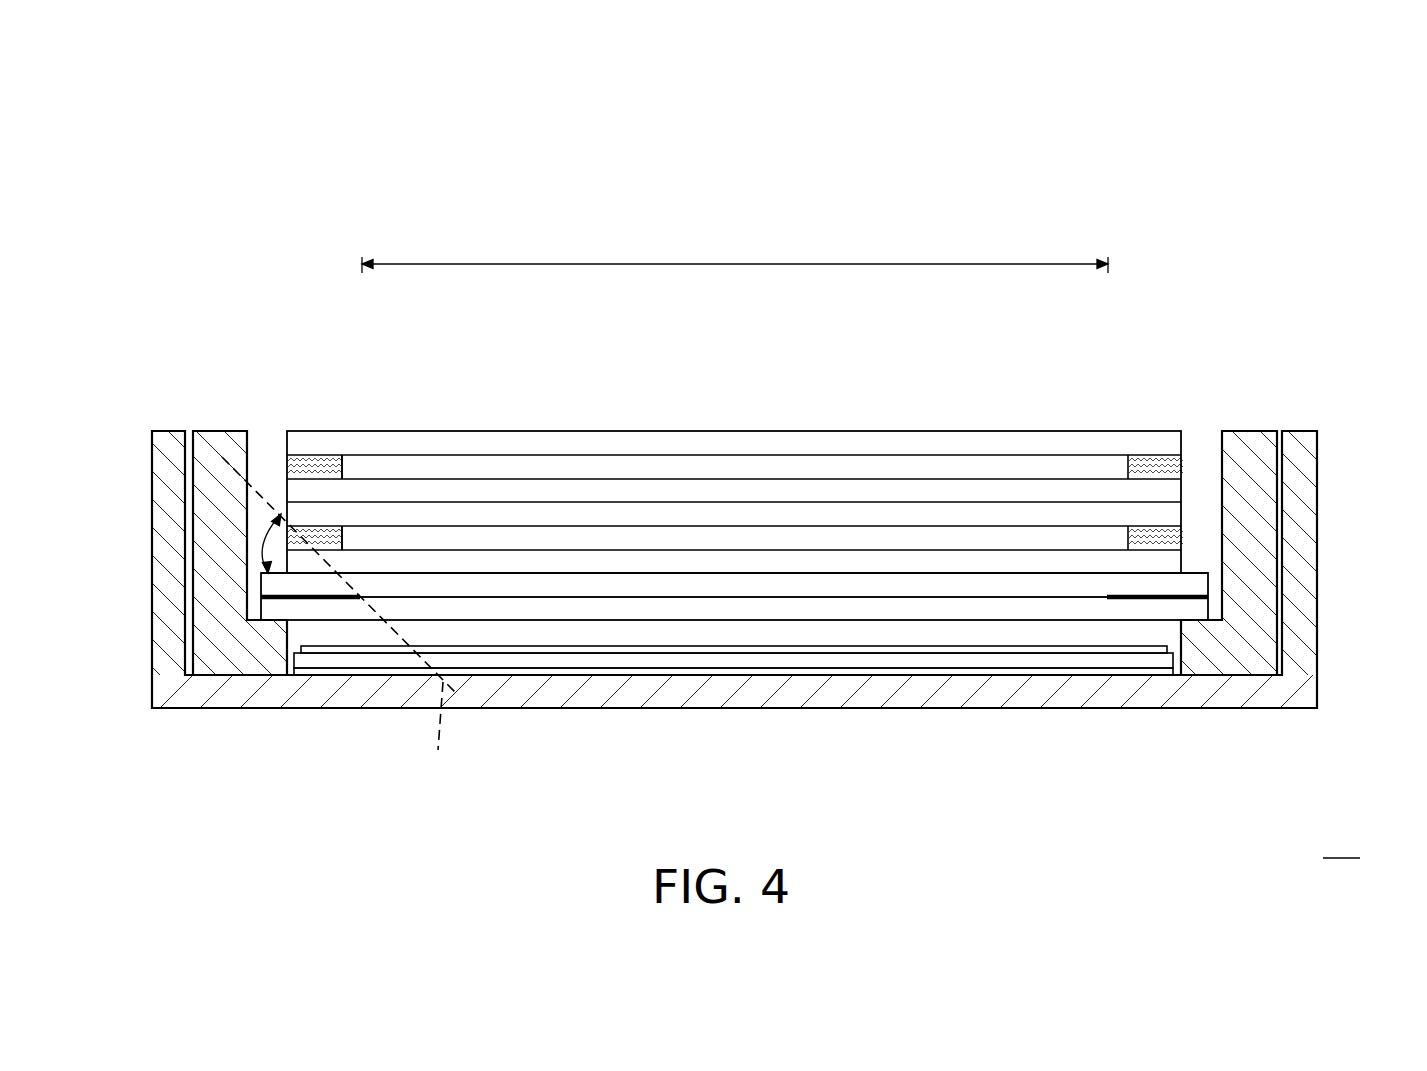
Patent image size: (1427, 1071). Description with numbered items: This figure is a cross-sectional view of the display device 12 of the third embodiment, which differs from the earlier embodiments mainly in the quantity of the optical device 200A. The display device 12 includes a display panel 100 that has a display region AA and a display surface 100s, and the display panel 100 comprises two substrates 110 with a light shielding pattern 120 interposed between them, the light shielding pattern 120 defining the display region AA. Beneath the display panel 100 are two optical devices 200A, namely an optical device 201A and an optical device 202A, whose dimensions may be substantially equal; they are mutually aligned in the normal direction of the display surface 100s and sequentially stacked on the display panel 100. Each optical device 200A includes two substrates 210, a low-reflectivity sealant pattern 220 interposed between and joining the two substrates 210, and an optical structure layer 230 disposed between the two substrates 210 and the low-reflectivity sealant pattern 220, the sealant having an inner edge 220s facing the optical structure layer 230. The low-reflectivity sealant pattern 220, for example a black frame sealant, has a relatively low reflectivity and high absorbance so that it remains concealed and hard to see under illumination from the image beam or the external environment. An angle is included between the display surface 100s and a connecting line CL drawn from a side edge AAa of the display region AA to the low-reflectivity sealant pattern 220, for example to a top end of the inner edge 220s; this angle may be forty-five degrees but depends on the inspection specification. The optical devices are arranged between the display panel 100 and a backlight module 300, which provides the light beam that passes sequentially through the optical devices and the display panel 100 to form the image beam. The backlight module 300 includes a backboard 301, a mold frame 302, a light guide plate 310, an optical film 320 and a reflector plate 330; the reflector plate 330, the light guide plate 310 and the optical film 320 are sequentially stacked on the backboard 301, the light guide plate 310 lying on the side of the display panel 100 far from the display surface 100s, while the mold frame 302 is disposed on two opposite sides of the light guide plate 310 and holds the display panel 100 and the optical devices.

The backlight module 300 is at (108, 52).
The backboard 301 is at (750, 693).
The mold frame 302 is at (217, 658).
The light guide plate 310 is at (608, 660).
The optical film 320 is at (538, 650).
The reflector plate 330 is at (682, 672).
The optical device 200A is at (1080, 355).
The substrate 210 is at (947, 445).
The low-reflectivity sealant pattern 220 is at (1133, 540).
The optical structure layer 230 is at (1015, 467).
The inner edge 220s is at (345, 540).
The optical device 202A is at (1193, 468).
The optical device 201A is at (1193, 541).
The display panel 100 is at (1122, 790).
The substrate 110 is at (1038, 585).
The light shielding pattern 120 is at (1140, 602).
The display surface 100s is at (652, 575).
The side edge AAa is at (363, 597).
The display region AA is at (735, 245).
The connecting line CL is at (338, 623).
The display device 12 is at (1341, 838).